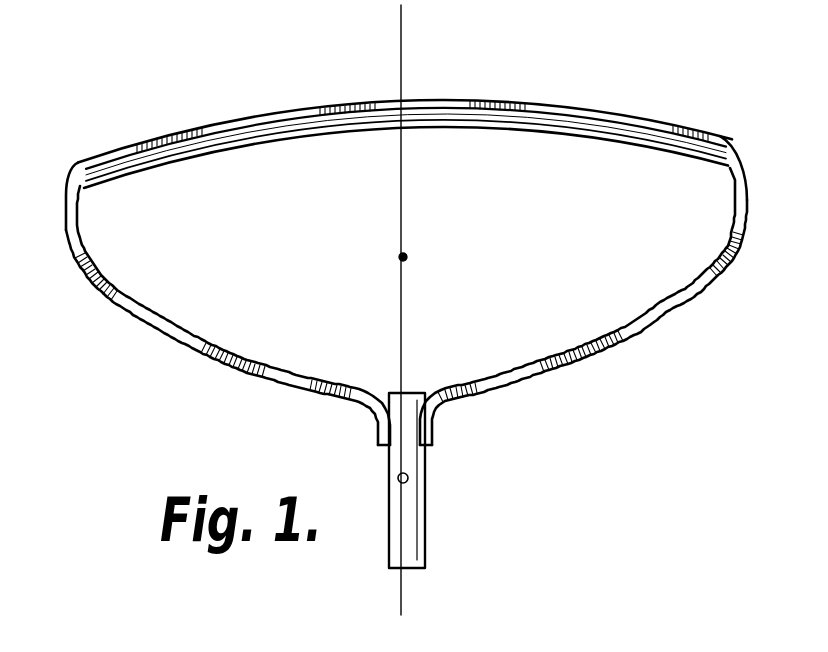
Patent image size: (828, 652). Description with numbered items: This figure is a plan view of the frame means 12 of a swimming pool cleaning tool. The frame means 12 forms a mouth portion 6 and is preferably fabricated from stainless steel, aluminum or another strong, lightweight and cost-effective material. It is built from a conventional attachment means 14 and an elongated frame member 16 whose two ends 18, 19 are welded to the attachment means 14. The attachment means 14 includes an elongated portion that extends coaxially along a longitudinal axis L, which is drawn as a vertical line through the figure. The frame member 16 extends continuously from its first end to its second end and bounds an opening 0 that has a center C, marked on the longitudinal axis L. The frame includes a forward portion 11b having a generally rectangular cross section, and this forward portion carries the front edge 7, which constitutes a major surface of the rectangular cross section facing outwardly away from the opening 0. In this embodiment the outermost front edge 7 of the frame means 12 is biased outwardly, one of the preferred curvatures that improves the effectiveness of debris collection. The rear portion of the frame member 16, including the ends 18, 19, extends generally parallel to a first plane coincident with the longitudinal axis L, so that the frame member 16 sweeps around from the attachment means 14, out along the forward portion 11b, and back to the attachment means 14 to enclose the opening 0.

The longitudinal axis L is at (401, 40).
The front edge 7 is at (383, 100).
The forward portion 11b is at (228, 118).
The mouth portion 6 is at (618, 168).
The opening 0 is at (505, 183).
The center C is at (405, 257).
The frame means 12 is at (602, 365).
The frame member 16 is at (505, 385).
The first end of frame member 18 is at (373, 423).
The second end of frame member 19 is at (432, 428).
The attachment means 14 is at (427, 518).